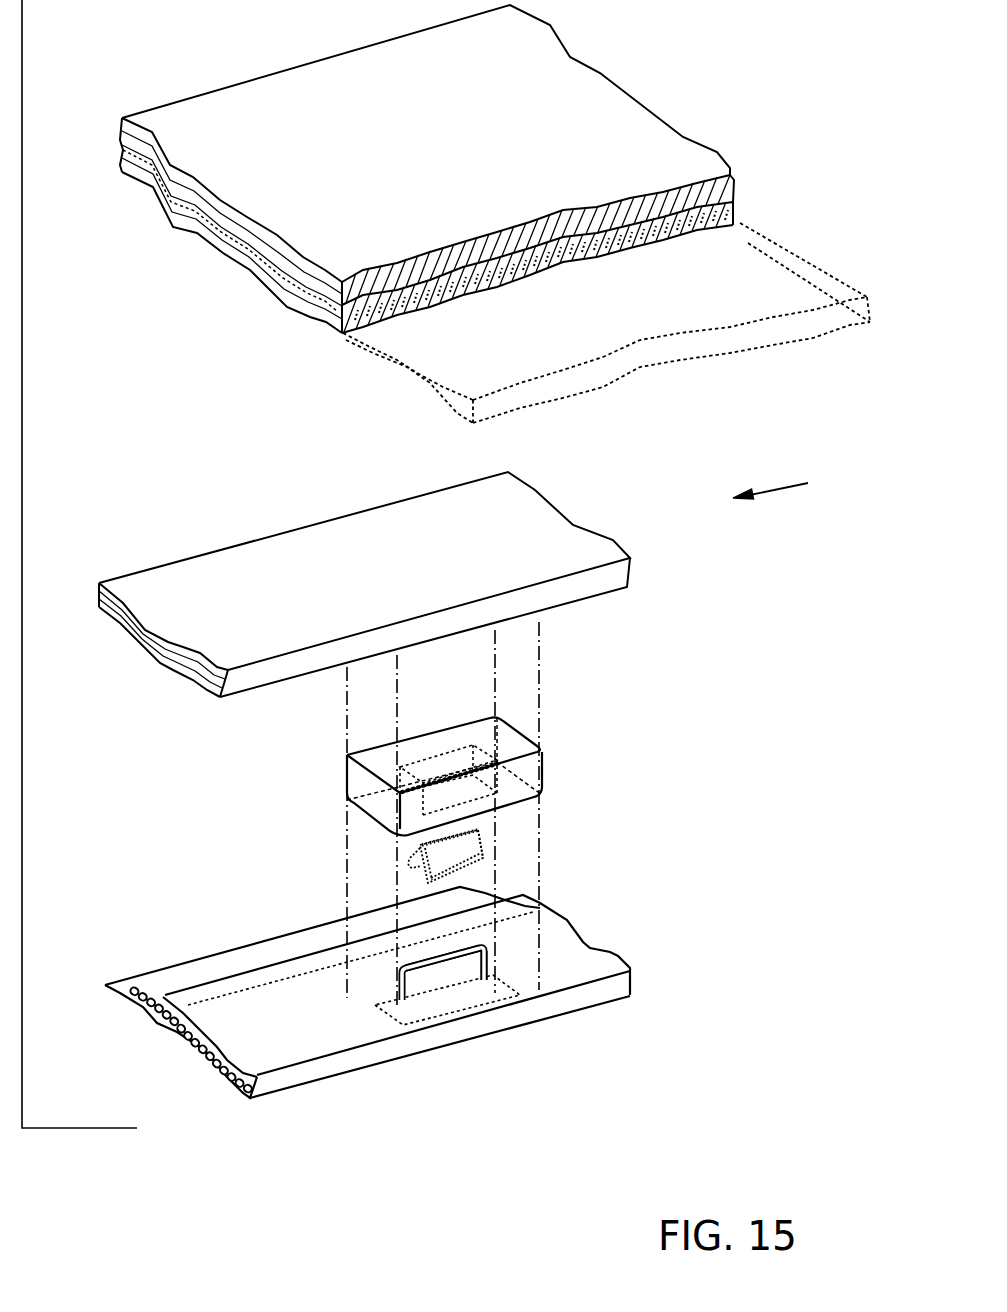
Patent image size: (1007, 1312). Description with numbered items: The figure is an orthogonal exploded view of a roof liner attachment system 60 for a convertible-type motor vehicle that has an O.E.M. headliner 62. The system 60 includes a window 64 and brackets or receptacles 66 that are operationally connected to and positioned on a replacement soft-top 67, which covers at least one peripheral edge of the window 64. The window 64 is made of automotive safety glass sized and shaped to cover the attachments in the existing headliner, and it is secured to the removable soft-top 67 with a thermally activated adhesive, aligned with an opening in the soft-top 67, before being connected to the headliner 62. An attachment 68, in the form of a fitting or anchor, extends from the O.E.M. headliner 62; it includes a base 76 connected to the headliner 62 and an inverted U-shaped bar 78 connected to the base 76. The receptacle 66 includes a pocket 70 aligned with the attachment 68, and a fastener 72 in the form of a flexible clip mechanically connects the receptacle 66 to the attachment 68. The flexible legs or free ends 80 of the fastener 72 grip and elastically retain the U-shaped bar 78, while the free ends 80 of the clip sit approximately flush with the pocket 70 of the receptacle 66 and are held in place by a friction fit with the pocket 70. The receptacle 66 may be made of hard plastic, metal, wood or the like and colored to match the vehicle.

The roof liner attachment system 60 is at (794, 483).
The O.E.M. headliner 62 is at (257, 1098).
The window 64 is at (736, 218).
The receptacle 66 is at (509, 752).
The replacement soft-top 67 is at (588, 95).
The attachment 68 is at (413, 962).
The pocket 70 is at (453, 760).
The fastener 72 is at (470, 870).
The base 76 is at (442, 1012).
The inverted U-shaped bar 78 is at (398, 971).
The free ends 80 is at (483, 852).